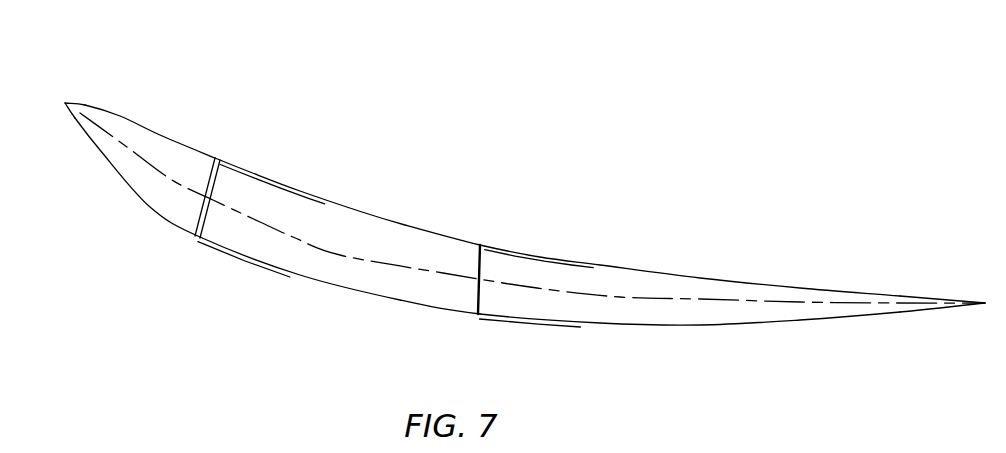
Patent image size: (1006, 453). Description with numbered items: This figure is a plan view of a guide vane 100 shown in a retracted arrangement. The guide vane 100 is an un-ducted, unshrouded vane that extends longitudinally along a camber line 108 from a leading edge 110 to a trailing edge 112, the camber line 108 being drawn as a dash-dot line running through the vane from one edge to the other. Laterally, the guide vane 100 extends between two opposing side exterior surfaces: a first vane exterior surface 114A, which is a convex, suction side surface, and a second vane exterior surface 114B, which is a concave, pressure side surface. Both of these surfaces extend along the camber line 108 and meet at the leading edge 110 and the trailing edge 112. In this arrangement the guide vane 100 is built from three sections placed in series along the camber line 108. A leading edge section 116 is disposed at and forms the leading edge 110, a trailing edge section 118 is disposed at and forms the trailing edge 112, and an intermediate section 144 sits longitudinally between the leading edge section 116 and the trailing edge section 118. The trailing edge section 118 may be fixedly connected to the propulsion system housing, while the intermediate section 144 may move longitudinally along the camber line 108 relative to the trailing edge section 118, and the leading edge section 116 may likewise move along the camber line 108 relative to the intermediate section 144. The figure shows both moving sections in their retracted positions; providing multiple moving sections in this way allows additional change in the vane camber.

The guide vane 100 is at (616, 161).
The camber line 108 is at (341, 253).
The leading edge 110 is at (63, 102).
The trailing edge 112 is at (983, 302).
The first vane exterior surface 114A is at (378, 301).
The second vane exterior surface 114B is at (362, 212).
The leading edge section 116 is at (202, 134).
The trailing edge section 118 is at (684, 264).
The intermediate section 144 is at (409, 214).